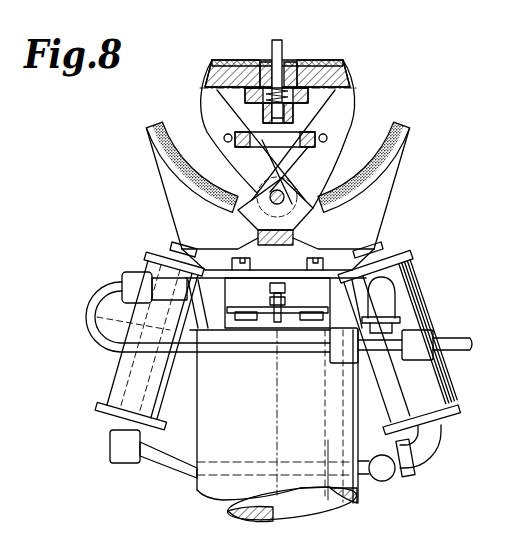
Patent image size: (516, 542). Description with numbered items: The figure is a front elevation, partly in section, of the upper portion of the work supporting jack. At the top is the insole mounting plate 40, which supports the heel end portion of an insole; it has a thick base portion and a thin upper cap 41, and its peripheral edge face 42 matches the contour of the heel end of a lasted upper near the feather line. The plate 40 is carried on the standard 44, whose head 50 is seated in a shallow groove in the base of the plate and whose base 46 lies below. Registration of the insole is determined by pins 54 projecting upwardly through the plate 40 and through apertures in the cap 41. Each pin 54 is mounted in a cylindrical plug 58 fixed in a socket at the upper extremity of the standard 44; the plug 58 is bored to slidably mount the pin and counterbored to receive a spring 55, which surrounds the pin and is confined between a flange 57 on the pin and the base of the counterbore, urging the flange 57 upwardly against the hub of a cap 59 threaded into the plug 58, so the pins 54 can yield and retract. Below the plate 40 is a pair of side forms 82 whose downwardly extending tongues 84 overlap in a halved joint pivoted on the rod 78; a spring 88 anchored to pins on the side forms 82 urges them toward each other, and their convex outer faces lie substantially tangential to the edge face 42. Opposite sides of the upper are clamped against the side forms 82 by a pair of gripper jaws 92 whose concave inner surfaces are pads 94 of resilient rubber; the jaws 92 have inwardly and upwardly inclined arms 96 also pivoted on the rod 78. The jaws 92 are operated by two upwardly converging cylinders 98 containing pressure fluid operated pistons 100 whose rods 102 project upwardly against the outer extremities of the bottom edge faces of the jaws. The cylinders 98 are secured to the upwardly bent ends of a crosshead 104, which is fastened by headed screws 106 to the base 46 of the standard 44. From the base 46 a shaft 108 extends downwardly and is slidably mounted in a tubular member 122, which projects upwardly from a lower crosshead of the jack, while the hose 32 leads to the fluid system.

The hose 32 is at (157, 473).
The plate 40 is at (222, 72).
The cap 41 is at (327, 62).
The edge face 42 is at (213, 70).
The standard 44 is at (238, 232).
The base 46 is at (309, 291).
The head 50 is at (310, 96).
The pins 54 is at (279, 41).
The spring 55 is at (275, 78).
The flange 57 is at (268, 84).
The plug 58 is at (293, 113).
The cap 59 is at (290, 76).
The rod 78 is at (277, 190).
The side forms 82 is at (208, 100).
The tongues 84 is at (257, 192).
The spring 88 is at (255, 133).
The gripper jaws 92 is at (160, 167).
The pads 94 is at (156, 128).
The arms 96 is at (294, 231).
The cylinders 98 is at (413, 299).
The pistons 100 is at (117, 385).
The rods 102 is at (92, 312).
The crosshead 104 is at (170, 254).
The headed screws 106 is at (310, 260).
The shaft 108 is at (305, 502).
The tubular member 122 is at (238, 452).